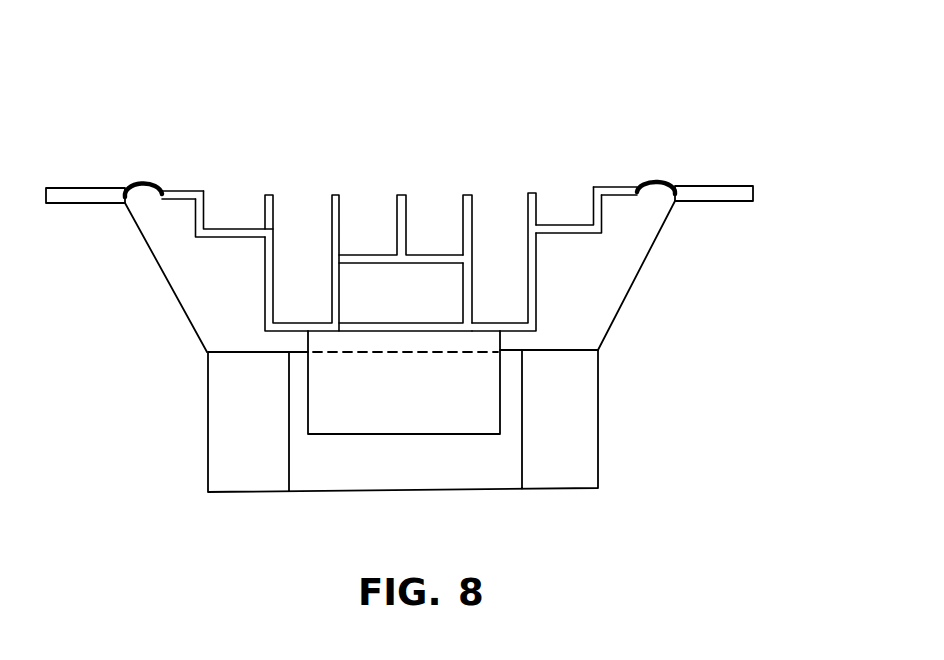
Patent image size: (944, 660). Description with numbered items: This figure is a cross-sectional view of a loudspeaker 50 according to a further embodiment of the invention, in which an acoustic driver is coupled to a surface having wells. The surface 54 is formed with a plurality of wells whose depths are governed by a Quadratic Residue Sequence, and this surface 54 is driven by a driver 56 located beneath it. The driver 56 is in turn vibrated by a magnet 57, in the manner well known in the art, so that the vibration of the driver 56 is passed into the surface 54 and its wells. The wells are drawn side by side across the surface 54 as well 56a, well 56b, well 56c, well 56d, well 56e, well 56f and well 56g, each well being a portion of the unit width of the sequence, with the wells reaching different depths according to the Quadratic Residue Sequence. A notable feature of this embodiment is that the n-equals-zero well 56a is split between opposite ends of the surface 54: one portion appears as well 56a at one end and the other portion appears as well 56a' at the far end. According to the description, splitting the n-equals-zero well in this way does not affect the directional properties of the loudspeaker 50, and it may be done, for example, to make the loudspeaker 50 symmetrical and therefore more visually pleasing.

The loudspeaker 50 is at (645, 285).
The surface 54 is at (658, 182).
The driver 56 is at (403, 417).
The n=0 well 56a is at (153, 119).
The well 56b is at (233, 205).
The well 56c is at (308, 222).
The well 56d is at (367, 222).
The well 56e is at (433, 215).
The well 56f is at (500, 220).
The well 56g is at (561, 198).
The split n=0 well portion 56a' is at (631, 137).
The magnet 57 is at (580, 401).